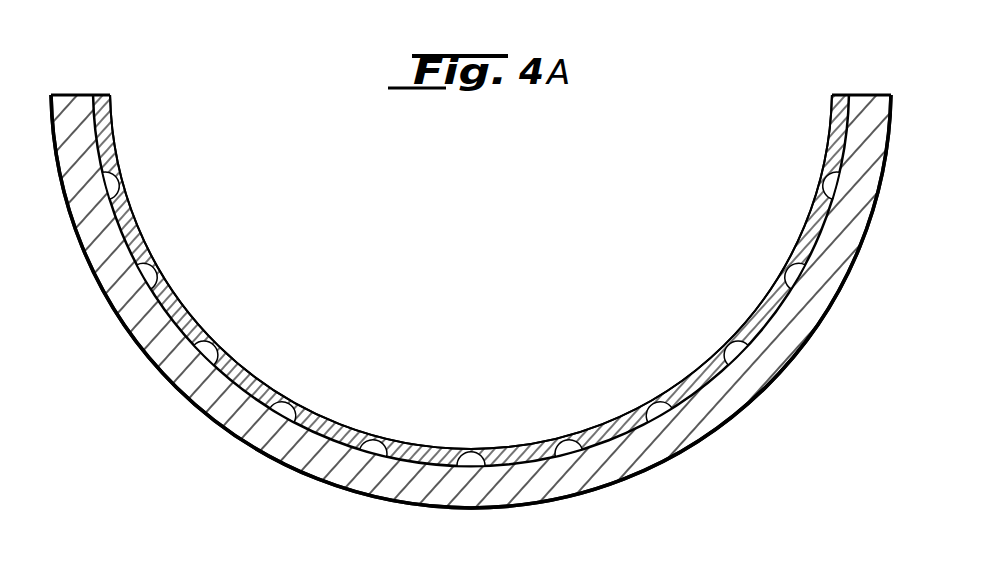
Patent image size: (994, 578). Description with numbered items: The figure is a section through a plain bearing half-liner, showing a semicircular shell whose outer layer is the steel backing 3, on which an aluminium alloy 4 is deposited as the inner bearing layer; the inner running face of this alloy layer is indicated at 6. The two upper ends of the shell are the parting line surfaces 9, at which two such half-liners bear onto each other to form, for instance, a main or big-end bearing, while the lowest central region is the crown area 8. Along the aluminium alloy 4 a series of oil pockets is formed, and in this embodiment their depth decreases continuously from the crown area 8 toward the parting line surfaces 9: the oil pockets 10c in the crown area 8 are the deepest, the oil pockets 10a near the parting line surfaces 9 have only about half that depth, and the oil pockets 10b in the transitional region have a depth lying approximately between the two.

The steel backing 3 is at (724, 414).
The aluminium alloy 4 is at (420, 449).
The bearing sliding surface 6 is at (193, 305).
The crown area 8 is at (479, 518).
The parting line surfaces 9 is at (81, 87).
The oil pockets 10a is at (118, 186).
The oil pockets 10b is at (212, 343).
The oil pockets 10c is at (472, 458).